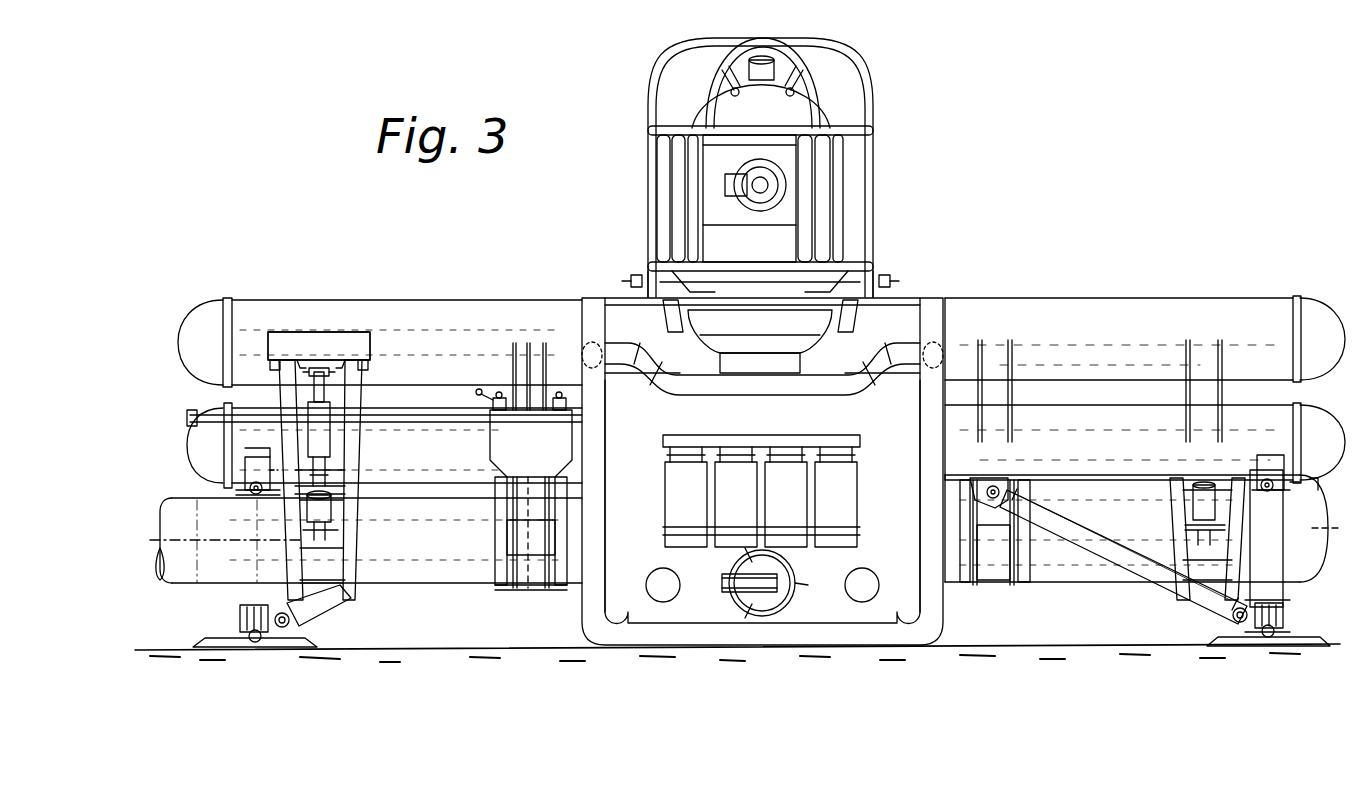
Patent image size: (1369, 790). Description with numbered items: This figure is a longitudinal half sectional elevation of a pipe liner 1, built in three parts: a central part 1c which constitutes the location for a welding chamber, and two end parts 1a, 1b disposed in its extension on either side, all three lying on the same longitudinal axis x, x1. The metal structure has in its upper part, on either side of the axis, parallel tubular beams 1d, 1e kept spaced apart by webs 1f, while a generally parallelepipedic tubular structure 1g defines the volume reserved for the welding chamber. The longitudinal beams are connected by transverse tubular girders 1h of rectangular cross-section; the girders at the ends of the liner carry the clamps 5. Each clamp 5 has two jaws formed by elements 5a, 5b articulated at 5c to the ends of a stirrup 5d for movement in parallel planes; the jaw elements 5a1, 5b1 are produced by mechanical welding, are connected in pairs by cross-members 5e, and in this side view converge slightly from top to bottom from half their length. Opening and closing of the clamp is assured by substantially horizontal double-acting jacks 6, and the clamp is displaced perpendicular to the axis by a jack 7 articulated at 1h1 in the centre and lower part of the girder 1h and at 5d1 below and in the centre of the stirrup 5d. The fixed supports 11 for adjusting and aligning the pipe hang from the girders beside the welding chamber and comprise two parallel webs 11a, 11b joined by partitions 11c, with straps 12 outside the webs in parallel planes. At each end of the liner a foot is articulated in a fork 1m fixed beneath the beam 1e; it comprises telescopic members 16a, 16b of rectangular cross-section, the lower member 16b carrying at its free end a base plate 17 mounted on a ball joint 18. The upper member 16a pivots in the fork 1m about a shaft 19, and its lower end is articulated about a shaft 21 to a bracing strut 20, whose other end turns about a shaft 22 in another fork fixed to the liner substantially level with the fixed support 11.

The liner 1 is at (935, 288).
The end part of the liner 1a is at (452, 428).
The end part of the liner 1b is at (1110, 428).
The central part 1c is at (762, 471).
The tubular beam 1d is at (1013, 318).
The tubular beam 1e is at (1035, 428).
The webs 1f is at (1010, 372).
The parallelepipedic tubular structure 1g is at (932, 512).
The transverse tubular girders 1h is at (350, 450).
The articulation point of jack 7 on girder 1h1 is at (327, 480).
The fork 1m is at (245, 470).
The clamp 5 is at (270, 396).
The jaw element 5a is at (290, 441).
The jaw element 5a1 is at (292, 570).
The jaw element 5b is at (352, 400).
The jaw element 5b1 is at (352, 586).
The articulation 5c is at (270, 365).
The stirrup 5d is at (292, 330).
The articulation point of jack 7 on stirrup 5d1 is at (320, 370).
The cross-members 5e is at (328, 558).
The double-acting jacks 6 is at (345, 470).
The double-acting jack 7 is at (325, 426).
The fixed support 11 is at (528, 597).
The web 11a is at (518, 588).
The web 11b is at (545, 588).
The partitions 11c is at (765, 551).
The straps 12 is at (500, 577).
The upper telescopic member 16a is at (1268, 547).
The lower telescopic member 16b is at (1280, 636).
The base plate 17 is at (205, 640).
The ball joint 18 is at (250, 630).
The shaft 19 is at (1300, 487).
The bracing strut 20 is at (1142, 565).
The shaft 21 is at (1236, 617).
The shaft 22 is at (990, 482).
The longitudinal axis end x is at (359, 540).
The longitudinal axis end x1 is at (1314, 514).